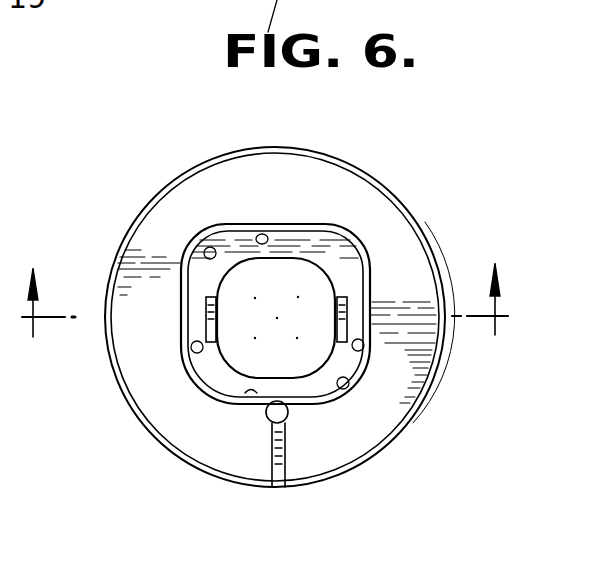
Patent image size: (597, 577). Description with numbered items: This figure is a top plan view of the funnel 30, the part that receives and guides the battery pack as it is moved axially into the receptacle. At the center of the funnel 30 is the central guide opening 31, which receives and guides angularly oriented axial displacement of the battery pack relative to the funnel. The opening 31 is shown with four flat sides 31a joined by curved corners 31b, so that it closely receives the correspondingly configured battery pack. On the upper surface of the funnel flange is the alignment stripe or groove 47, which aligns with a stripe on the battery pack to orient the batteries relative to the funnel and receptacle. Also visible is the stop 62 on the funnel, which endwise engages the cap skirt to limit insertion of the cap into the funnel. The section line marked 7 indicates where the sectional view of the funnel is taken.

The central guide opening 31 is at (296, 278).
The flat sides 31a is at (264, 236).
The curved corners 31b is at (206, 250).
The stop 62 is at (205, 336).
The alignment stripe or groove 47 is at (277, 468).
The section line 7 is at (265, 281).
The funnel 30 is at (28, 555).